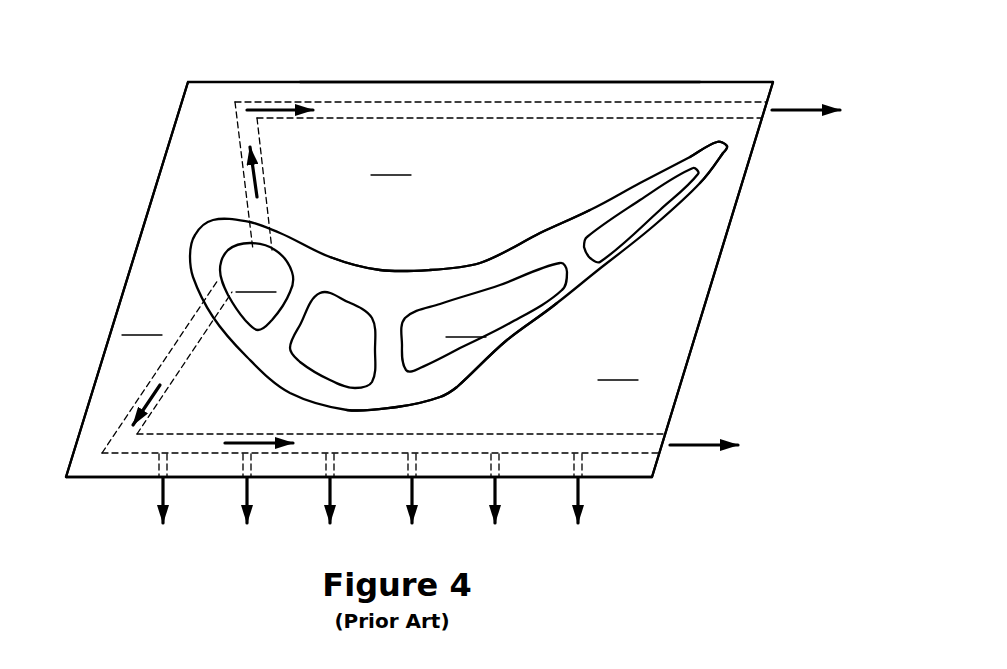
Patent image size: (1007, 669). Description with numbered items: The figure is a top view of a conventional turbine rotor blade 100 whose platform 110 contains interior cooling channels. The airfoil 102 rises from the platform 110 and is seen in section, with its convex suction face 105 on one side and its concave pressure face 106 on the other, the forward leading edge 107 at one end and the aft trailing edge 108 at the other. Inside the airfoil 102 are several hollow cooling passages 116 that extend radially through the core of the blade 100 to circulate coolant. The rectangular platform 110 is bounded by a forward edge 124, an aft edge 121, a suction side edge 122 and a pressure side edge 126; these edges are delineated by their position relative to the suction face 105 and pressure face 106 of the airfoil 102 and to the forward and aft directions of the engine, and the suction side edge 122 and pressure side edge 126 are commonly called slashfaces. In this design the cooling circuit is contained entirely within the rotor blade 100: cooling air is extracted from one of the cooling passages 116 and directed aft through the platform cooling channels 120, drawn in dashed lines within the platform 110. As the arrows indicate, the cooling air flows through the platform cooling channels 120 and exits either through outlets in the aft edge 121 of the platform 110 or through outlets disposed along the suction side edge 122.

The turbine rotor blade 100 is at (98, 90).
The airfoil 102 is at (177, 247).
The suction face 105 is at (456, 393).
The pressure face 106 is at (462, 265).
The leading edge 107 is at (197, 226).
The trailing edge 108 is at (729, 146).
The platform 110 is at (380, 265).
The cooling passages 116 is at (459, 278).
The platform cooling channels 120 is at (356, 101).
The aft edge 121 is at (703, 318).
The suction side edge 122 is at (107, 478).
The forward edge 124 is at (119, 302).
The pressure side edge 126 is at (671, 81).